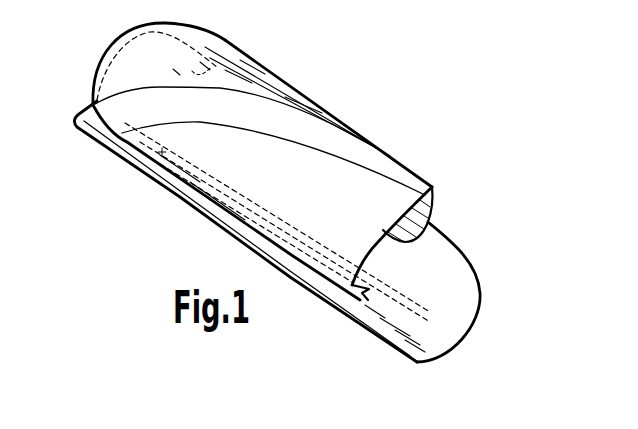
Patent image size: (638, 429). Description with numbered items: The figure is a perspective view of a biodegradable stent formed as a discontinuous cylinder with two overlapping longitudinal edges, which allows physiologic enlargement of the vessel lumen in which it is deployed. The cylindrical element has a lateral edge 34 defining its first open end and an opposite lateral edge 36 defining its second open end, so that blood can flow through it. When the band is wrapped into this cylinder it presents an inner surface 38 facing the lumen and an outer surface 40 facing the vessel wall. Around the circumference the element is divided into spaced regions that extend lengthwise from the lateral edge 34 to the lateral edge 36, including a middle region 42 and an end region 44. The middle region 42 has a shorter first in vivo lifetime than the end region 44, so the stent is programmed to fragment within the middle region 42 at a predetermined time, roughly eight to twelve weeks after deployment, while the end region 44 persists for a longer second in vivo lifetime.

The first lateral edge 34 is at (155, 26).
The second lateral edge 36 is at (438, 229).
The inner surface 38 is at (437, 293).
The outer surface 40 is at (327, 193).
The middle region 42 is at (248, 117).
The end region 44 is at (187, 73).